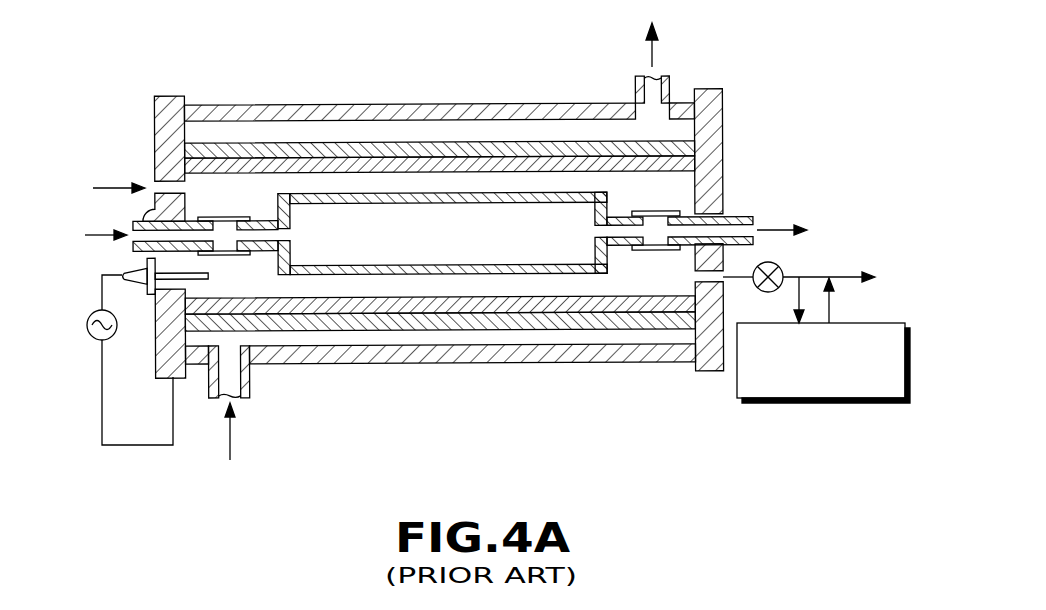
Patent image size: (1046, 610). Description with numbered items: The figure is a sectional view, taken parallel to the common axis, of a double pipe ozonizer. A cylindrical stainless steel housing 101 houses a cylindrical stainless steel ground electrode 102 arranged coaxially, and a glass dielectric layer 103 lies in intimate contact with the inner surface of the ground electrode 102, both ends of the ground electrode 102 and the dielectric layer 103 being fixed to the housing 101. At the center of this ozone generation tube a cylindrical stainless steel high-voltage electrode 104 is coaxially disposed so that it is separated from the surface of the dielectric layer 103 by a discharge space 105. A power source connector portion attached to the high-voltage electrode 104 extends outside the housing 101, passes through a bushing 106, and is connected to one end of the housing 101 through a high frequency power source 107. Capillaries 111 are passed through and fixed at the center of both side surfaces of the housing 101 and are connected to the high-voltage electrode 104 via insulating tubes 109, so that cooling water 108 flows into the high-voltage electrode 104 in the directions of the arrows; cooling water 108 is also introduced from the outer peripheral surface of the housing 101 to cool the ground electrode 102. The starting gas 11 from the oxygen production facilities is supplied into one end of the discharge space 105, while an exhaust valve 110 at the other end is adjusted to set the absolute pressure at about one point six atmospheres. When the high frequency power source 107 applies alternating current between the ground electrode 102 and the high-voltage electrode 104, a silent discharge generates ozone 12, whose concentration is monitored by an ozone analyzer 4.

The ozone analyzer 4 is at (820, 403).
The starting gas 11 is at (112, 188).
The ozone 12 is at (843, 277).
The housing 101 is at (172, 95).
The ground electrode 102 is at (352, 148).
The dielectric layer 103 is at (437, 158).
The high-voltage electrode 104 is at (502, 195).
The discharge space 105 is at (583, 180).
The bushing 106 is at (122, 270).
The high frequency power source 107 is at (88, 333).
The cooling water 108 is at (655, 50).
The insulating tube 109 is at (660, 212).
The exhaust valve 110 is at (782, 265).
The capillary 111 is at (187, 203).